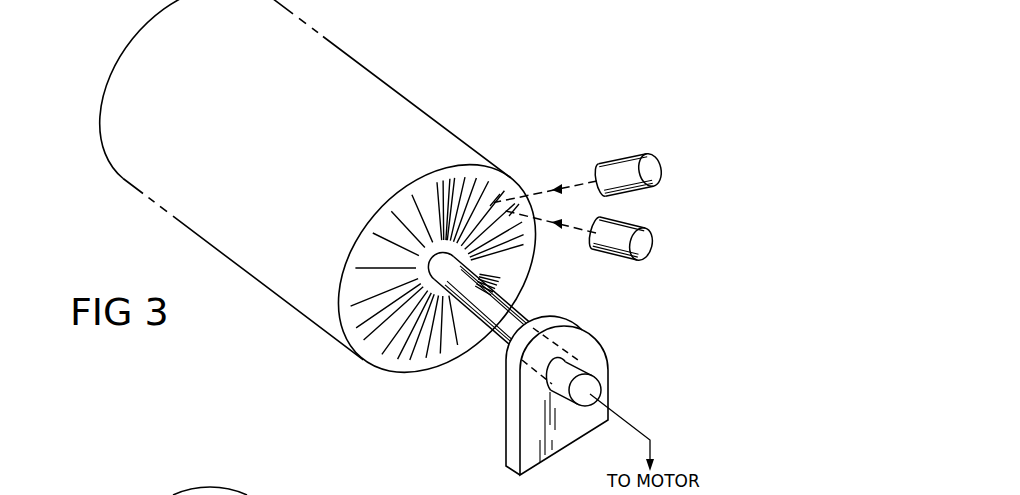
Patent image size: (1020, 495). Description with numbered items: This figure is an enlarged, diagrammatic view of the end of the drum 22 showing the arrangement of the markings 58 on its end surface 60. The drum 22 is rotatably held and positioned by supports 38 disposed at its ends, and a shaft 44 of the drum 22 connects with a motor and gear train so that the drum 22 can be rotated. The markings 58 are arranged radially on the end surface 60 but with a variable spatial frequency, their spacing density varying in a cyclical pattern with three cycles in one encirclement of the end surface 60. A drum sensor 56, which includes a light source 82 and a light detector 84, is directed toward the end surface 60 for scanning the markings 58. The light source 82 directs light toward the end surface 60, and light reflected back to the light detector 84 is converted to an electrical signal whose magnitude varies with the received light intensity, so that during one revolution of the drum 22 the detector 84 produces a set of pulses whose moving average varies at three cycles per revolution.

The drum 22 is at (396, 86).
The end surface 60 is at (375, 363).
The markings 58 is at (413, 353).
The shaft 44 is at (490, 343).
The supports 38 is at (611, 376).
The drum sensor 56 is at (611, 210).
The light source 82 is at (618, 160).
The light detector 84 is at (622, 258).